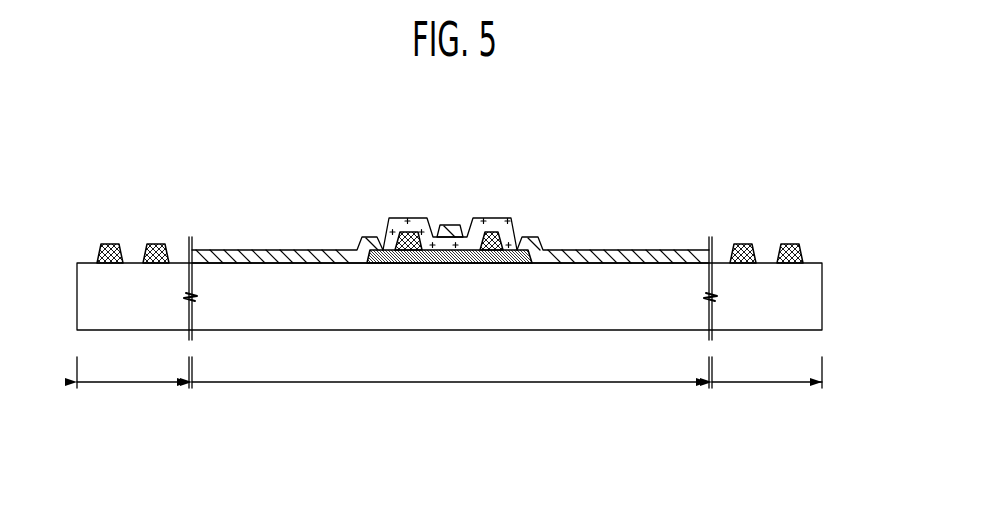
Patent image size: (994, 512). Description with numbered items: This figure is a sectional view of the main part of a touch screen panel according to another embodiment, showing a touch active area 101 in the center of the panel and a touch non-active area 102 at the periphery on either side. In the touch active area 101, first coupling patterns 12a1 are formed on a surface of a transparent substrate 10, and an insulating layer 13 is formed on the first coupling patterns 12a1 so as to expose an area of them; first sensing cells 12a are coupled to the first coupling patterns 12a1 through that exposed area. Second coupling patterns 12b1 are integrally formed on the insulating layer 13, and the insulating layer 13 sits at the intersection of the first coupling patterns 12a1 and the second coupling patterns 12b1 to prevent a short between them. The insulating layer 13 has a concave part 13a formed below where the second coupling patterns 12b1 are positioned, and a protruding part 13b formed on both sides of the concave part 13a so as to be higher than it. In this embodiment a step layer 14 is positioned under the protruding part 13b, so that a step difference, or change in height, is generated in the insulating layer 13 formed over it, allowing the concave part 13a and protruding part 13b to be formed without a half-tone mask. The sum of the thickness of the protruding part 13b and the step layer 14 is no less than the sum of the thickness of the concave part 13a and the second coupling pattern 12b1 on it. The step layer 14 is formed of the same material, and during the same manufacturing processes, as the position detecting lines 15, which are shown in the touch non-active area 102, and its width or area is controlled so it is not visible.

The transparent substrate 10 is at (822, 296).
The first sensing cells 12a is at (272, 257).
The first coupling patterns 12a1 is at (455, 262).
The second coupling patterns 12b1 is at (452, 226).
The insulating layer 13 is at (433, 157).
The concave part 13a is at (433, 220).
The protruding part 13b is at (407, 219).
The step layer 14 is at (493, 233).
The position detecting lines 15 is at (803, 250).
The touch active area 101 is at (450, 385).
The touch non-active area 102 is at (449, 385).